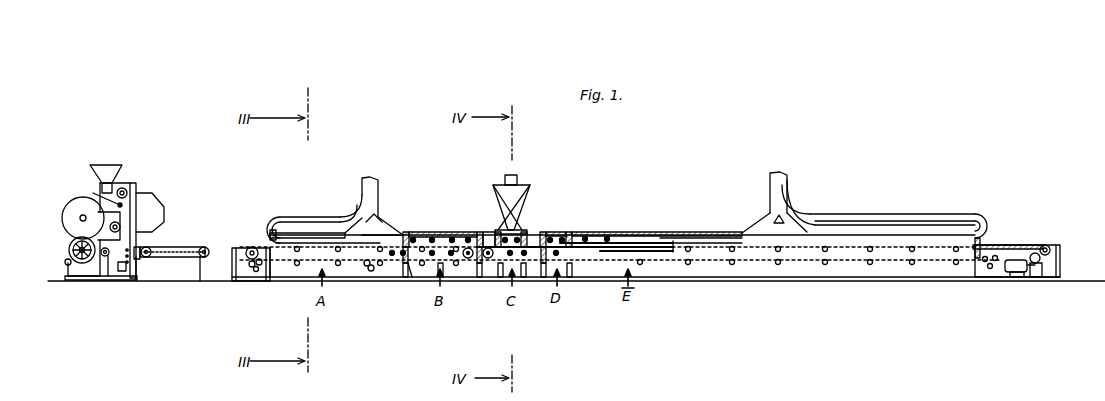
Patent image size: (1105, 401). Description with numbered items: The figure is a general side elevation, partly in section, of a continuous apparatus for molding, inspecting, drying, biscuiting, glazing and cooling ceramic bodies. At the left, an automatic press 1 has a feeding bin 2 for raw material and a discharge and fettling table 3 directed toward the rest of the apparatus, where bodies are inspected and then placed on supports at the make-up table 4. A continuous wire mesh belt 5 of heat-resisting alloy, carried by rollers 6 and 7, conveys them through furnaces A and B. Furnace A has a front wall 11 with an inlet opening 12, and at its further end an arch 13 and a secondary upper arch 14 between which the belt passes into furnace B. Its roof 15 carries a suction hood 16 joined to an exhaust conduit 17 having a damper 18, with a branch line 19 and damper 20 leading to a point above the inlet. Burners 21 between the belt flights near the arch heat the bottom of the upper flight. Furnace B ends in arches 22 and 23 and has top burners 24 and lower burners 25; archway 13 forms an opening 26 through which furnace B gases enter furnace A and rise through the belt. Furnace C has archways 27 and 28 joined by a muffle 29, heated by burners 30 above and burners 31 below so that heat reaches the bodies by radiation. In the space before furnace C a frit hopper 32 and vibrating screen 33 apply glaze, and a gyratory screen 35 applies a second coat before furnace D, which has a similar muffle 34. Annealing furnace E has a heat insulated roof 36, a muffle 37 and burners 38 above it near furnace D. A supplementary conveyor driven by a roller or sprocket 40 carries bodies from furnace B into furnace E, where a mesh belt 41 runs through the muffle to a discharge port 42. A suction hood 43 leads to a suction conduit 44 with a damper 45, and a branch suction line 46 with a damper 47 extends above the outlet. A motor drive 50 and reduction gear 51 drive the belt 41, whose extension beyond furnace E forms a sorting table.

The automatic press 1 is at (132, 232).
The feeding bin 2 is at (122, 172).
The discharge and fettling table 3 is at (190, 247).
The make-up table 4 is at (232, 248).
The continuous wire mesh belt 5 is at (320, 250).
The roller 6 is at (250, 255).
The roller 7 is at (468, 262).
The front wall 11 is at (275, 250).
The inlet opening 12 is at (282, 238).
The arch 13 is at (402, 257).
The secondary upper arch 14 is at (405, 232).
The roof 15 is at (305, 236).
The suction hood 16 is at (382, 230).
The conduit 17 is at (378, 185).
The damper 18 is at (372, 215).
The branch line 19 is at (346, 208).
The damper 20 is at (270, 215).
The burners 21 is at (392, 255).
The arch 22 is at (485, 258).
The arch 23 is at (486, 232).
The top burners 24 is at (452, 240).
The burners 25 is at (422, 258).
The opening or conduit 26 is at (412, 272).
The archway 27 is at (497, 258).
The archway 28 is at (520, 258).
The muffle 29 is at (516, 238).
The burners 30 is at (507, 238).
The burners 31 is at (523, 262).
The frit hopper 32 is at (515, 195).
The vibrating screen or feeding mechanism 33 is at (484, 230).
The muffle 34 is at (563, 238).
The gyratory screen 35 is at (545, 236).
The heat insulated roof 36 is at (673, 232).
The muffle 37 is at (645, 245).
The burners 38 is at (585, 238).
The roller or sprocket 40 is at (495, 255).
The mesh belt 41 is at (706, 245).
The discharge port 42 is at (982, 245).
The suction hood 43 is at (760, 226).
The suction conduit 44 is at (780, 180).
The damper 45 is at (790, 206).
The branch suction line 46 is at (875, 217).
The damper 47 is at (976, 214).
The motor drive 50 is at (1015, 270).
The reduction gear 51 is at (1050, 263).